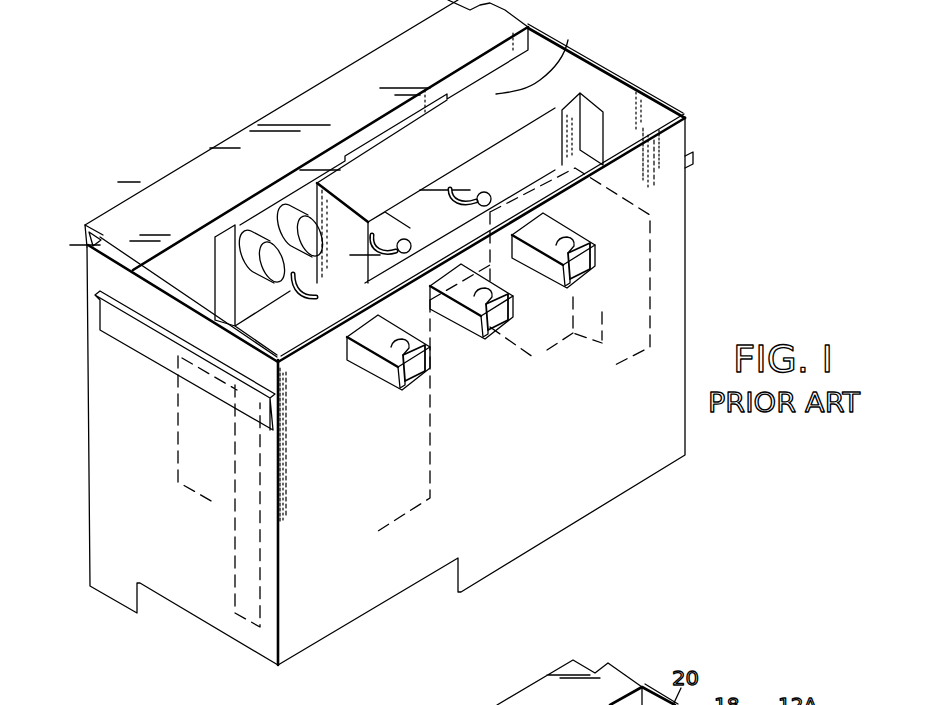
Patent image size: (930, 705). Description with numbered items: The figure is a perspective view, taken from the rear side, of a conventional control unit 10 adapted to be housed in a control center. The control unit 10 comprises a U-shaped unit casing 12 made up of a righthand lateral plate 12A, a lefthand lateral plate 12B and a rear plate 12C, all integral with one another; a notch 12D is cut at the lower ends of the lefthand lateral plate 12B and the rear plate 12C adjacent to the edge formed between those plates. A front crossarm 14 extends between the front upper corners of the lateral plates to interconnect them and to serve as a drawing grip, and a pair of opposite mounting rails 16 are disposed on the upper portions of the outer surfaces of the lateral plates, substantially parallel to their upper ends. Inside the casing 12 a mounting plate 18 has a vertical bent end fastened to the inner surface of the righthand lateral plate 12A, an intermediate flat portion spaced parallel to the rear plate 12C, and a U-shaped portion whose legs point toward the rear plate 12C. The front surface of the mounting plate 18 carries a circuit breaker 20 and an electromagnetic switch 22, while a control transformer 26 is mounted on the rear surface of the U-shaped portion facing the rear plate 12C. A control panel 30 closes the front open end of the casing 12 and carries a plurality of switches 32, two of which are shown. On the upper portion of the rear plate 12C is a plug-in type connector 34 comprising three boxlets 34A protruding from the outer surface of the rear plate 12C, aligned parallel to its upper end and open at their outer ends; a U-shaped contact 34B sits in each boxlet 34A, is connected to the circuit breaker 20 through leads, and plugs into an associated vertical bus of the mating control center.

The control unit 10 is at (377, 364).
The unit casing 12 is at (377, 364).
The righthand lateral plate 12A is at (663, 101).
The lefthand lateral plate 12B is at (116, 508).
The rear plate 12C is at (539, 519).
The notch 12D is at (292, 668).
The front crossarm 14 is at (398, 50).
The mounting rails 16 is at (97, 311).
The mounting plate 18 is at (562, 109).
The circuit breaker 20 is at (539, 55).
The electromagnetic switch 22 is at (177, 432).
The control transformer 26 is at (654, 352).
The control panel 30 is at (224, 246).
The switches 32 is at (290, 220).
The plug-in type connector 34 is at (503, 200).
The boxlets 34A is at (460, 322).
The U-shaped contacts 34B is at (412, 366).